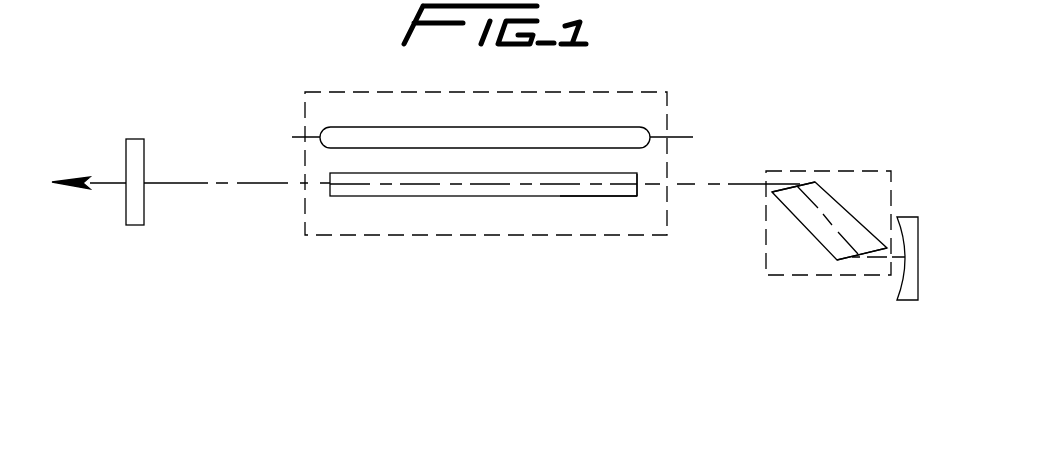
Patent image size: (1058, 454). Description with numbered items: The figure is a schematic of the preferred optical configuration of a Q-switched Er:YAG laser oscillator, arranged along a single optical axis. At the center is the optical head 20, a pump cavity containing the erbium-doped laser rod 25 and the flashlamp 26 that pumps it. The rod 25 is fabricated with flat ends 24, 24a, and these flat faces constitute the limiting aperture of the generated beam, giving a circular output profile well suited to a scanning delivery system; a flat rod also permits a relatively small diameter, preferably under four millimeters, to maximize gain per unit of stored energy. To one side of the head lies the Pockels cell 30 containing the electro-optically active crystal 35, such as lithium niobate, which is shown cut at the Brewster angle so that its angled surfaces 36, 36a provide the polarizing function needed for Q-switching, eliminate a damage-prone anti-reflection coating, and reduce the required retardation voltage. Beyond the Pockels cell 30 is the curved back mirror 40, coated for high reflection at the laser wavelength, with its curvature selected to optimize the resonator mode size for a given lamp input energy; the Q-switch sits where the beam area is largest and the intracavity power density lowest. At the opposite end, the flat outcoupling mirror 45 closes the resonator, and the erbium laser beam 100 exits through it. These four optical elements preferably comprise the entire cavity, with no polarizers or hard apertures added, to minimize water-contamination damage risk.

The erbium laser beam 100 is at (117, 184).
The outcoupling mirror 45 is at (135, 143).
The optical head 20 is at (633, 236).
The flat end 24 is at (328, 184).
The flat end 24a is at (639, 183).
The erbium-doped laser rod 25 is at (600, 197).
The flashlamp 26 is at (445, 132).
The Pockels cell 30 is at (797, 277).
The electro-optically active crystal 35 is at (838, 217).
The prism entrance face 36 is at (797, 188).
The prism reflecting face 36a is at (857, 254).
The high reflecting mirror 40 is at (915, 218).